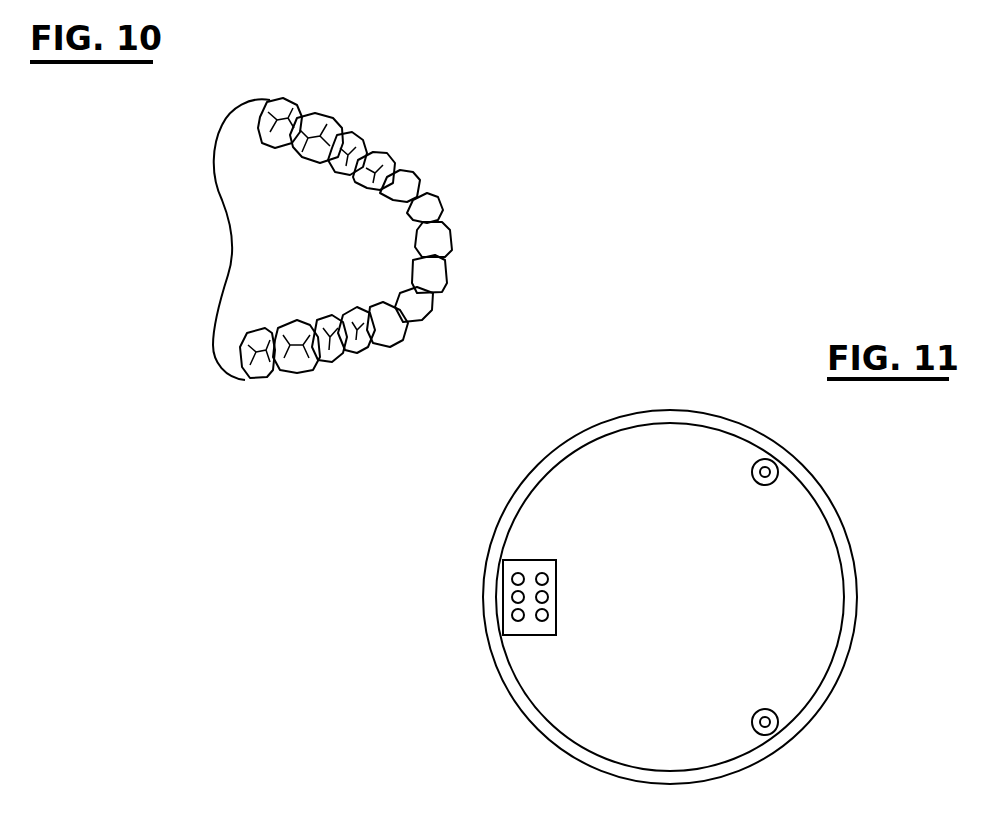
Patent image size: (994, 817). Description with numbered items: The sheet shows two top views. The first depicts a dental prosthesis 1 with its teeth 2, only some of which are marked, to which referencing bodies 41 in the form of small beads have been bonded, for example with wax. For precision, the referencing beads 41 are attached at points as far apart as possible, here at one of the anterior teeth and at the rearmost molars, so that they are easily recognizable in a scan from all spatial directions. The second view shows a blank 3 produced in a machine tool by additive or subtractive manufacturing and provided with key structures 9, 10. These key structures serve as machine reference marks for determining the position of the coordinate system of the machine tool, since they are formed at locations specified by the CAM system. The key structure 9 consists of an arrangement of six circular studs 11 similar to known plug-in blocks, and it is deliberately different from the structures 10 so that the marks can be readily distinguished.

In FIG. 10, the dental prosthesis 1 is at (404, 113).
In FIG. 10, the teeth 2 is at (353, 133).
In FIG. 10, the referencing bodies 41 is at (288, 107).
In FIG. 11, the blank 3 is at (669, 600).
In FIG. 11, the key structures 10 is at (775, 469).
In FIG. 11, the key structure 9 is at (508, 590).
In FIG. 11, the circular studs 11 is at (515, 615).